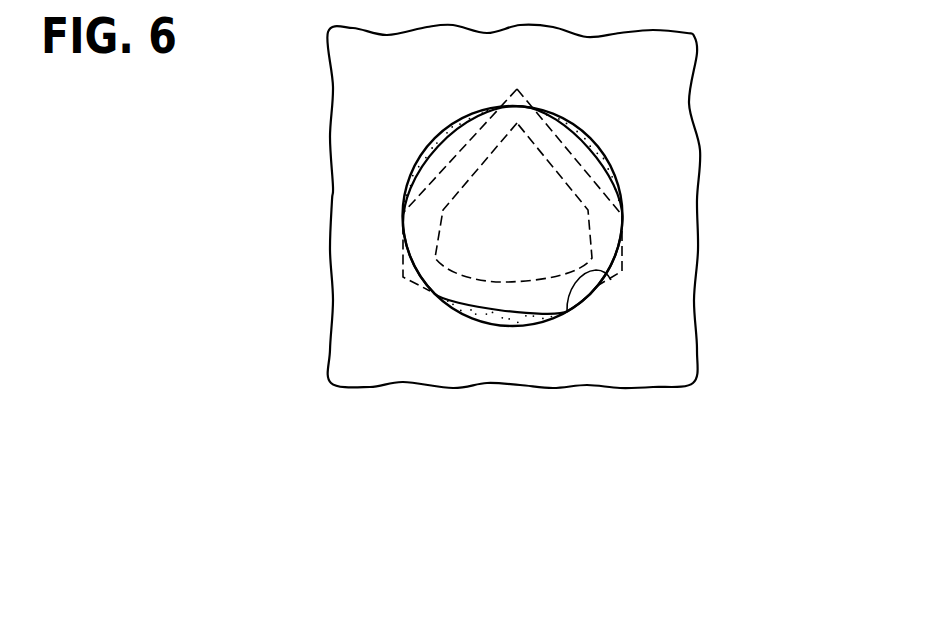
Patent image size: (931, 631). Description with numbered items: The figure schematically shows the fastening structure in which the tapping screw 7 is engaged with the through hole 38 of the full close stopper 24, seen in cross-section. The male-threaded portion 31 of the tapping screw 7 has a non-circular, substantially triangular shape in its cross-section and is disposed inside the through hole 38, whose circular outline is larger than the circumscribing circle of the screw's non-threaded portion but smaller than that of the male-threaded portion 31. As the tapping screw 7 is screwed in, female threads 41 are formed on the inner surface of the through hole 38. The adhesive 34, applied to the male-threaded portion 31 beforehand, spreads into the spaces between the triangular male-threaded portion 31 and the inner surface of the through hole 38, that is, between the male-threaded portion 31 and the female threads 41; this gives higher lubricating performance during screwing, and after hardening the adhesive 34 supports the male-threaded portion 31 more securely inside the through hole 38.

The full close stopper 24 is at (663, 73).
The through hole 38 is at (404, 196).
The male-threaded portion 31 is at (500, 316).
The adhesive 34 is at (613, 170).
The tapping screw 7 is at (586, 210).
The female threads 41 is at (567, 312).